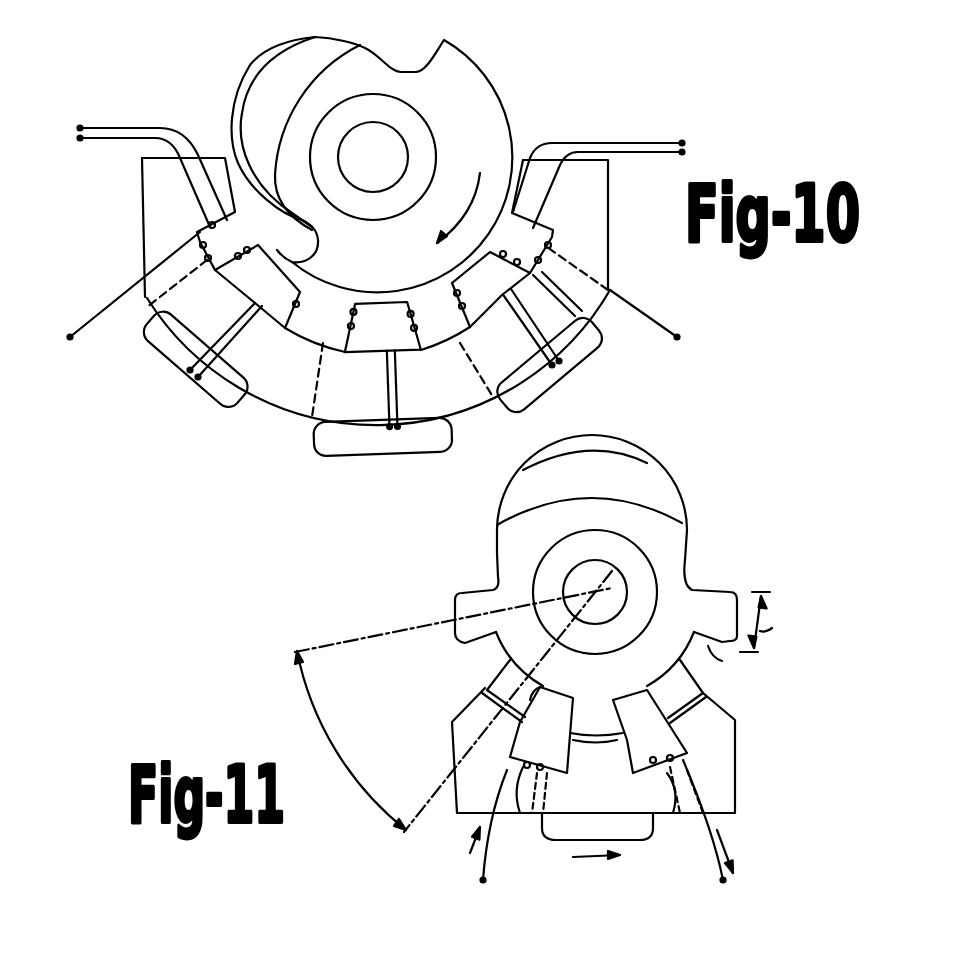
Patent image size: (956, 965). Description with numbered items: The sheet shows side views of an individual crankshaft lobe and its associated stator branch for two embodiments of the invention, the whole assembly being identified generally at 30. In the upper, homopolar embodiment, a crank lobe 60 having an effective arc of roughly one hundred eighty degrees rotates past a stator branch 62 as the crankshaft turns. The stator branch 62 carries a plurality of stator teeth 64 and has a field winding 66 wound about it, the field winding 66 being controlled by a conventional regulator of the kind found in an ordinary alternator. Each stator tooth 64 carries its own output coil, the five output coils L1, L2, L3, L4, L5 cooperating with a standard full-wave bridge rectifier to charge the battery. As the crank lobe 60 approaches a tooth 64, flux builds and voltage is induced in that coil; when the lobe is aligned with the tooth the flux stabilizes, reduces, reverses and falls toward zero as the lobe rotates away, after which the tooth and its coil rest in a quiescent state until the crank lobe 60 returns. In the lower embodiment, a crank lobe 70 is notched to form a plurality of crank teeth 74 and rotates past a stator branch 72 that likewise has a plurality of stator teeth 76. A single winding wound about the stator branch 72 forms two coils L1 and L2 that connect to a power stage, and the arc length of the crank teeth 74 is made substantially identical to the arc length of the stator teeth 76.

In FIG. 10, the motor 30 is at (349, 9).
In FIG. 10, the crank lobe 60 is at (452, 72).
In FIG. 10, the stator branch 62 is at (603, 207).
In FIG. 10, the stator teeth 64 is at (353, 296).
In FIG. 10, the field winding 66 is at (103, 318).
In FIG. 10, the output coil L1 is at (619, 182).
In FIG. 11, the output coil L1 is at (557, 822).
In FIG. 10, the output coil L2 is at (565, 368).
In FIG. 11, the output coil L2 is at (698, 819).
In FIG. 10, the output coil L3 is at (381, 443).
In FIG. 10, the output coil L4 is at (198, 380).
In FIG. 10, the output coil L5 is at (133, 174).
In FIG. 11, the crank lobe 70 is at (672, 553).
In FIG. 11, the stator branch 72 is at (738, 767).
In FIG. 11, the crank teeth 74 is at (571, 698).
In FIG. 11, the stator teeth 76 is at (733, 708).